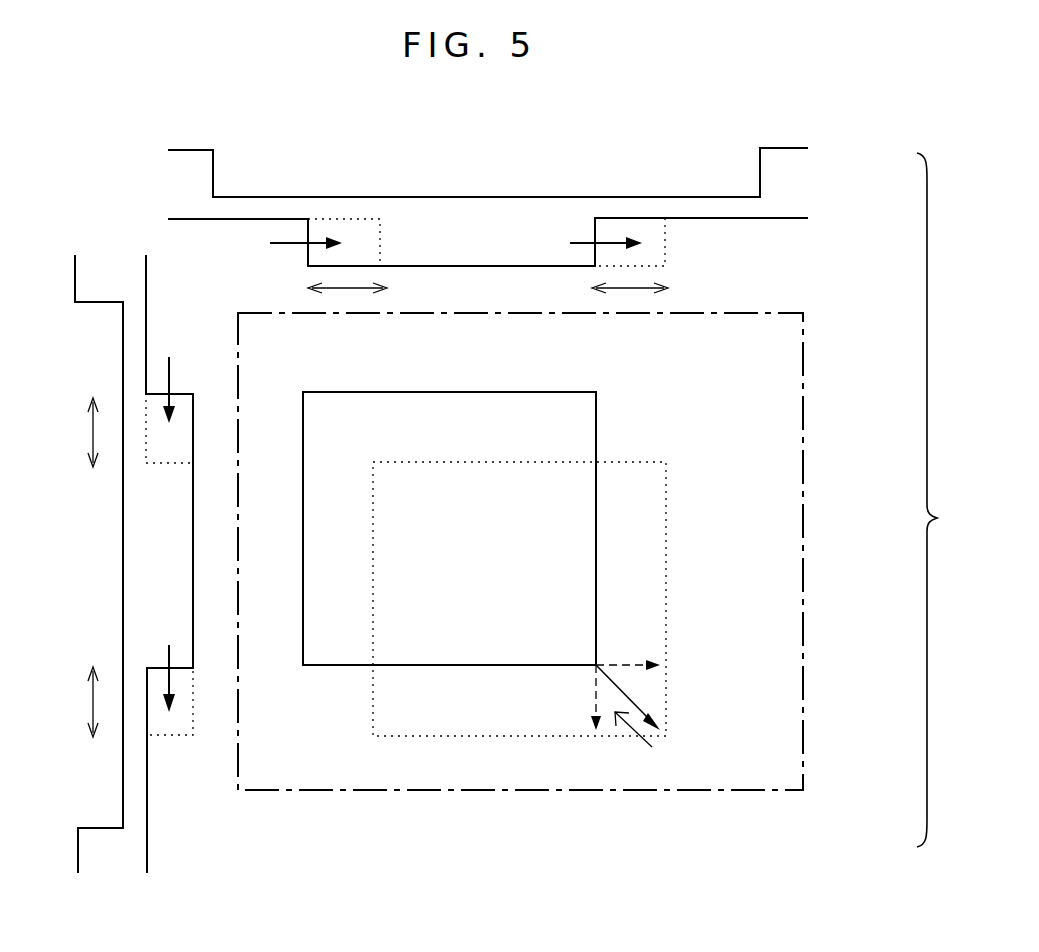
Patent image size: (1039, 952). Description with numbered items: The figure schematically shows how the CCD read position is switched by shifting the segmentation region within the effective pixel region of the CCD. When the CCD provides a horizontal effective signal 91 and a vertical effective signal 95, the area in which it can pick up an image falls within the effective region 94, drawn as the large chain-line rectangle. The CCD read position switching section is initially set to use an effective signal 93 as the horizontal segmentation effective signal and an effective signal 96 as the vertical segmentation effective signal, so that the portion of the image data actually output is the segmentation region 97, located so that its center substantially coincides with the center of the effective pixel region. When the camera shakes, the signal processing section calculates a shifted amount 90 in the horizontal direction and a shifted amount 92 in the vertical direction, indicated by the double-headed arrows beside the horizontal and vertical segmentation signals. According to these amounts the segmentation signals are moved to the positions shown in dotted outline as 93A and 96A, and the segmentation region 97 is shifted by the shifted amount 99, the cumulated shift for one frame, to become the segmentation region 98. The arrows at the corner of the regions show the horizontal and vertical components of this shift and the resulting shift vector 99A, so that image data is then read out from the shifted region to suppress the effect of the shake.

The shifted amount in the horizontal direction 90 is at (345, 290).
The horizontal effective signal 91 is at (808, 148).
The shifted amount in the vertical direction 92 is at (92, 430).
The horizontal segmentation effective signal 93 is at (808, 218).
The moved position of movable member 93A is at (665, 247).
The effective region 94 is at (803, 415).
The vertical effective signal 95 is at (78, 845).
The vertical segmentation effective signal 96 is at (147, 850).
The moved position of movable member 96A is at (165, 740).
The segmentation region at initial setting 97 is at (597, 432).
The segmentation region after shifting 98 is at (666, 608).
The shifted amount in the photographed image for one frame 99 is at (636, 690).
The shift vector 99A is at (634, 720).